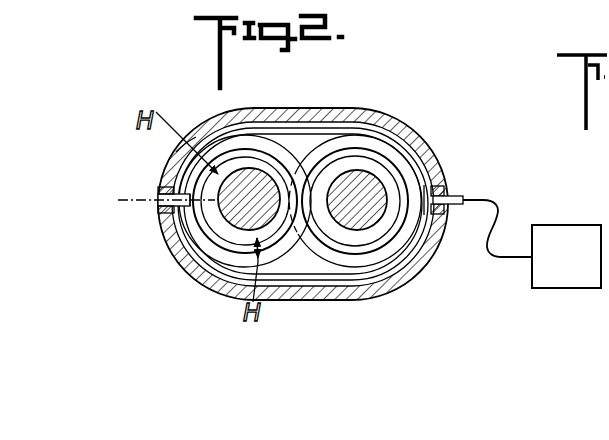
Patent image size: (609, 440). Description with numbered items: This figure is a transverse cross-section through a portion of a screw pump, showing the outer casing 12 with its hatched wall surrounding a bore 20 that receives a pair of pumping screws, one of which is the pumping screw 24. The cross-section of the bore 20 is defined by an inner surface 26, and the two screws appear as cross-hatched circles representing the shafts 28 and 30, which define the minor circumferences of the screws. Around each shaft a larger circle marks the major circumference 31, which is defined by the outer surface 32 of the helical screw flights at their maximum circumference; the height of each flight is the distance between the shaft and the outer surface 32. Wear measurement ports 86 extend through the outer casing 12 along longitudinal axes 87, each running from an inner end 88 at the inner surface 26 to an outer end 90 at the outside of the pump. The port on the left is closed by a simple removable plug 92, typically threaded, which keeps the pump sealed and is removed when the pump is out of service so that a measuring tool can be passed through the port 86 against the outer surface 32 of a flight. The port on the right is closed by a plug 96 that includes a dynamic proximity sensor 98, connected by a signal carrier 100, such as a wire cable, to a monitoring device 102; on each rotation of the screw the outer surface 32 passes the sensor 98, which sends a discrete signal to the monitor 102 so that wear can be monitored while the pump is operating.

The outer casing 12 is at (341, 106).
The bore 20 is at (290, 126).
The pumping screw 24 is at (178, 253).
The inner surface 26 is at (241, 138).
The shaft 28 is at (350, 232).
The shaft 30 is at (230, 226).
The major circumference 31 is at (396, 122).
The outer surface 32 is at (447, 223).
The wear measurement port 86 is at (163, 216).
The longitudinal axis 87 is at (123, 200).
The inner end 88 is at (176, 238).
The outer end 90 is at (168, 194).
The removable plug 92 is at (184, 150).
The plug 96 is at (446, 224).
The dynamic proximity sensor 98 is at (463, 197).
The signal carrier 100 is at (497, 214).
The monitoring device 102 is at (567, 225).